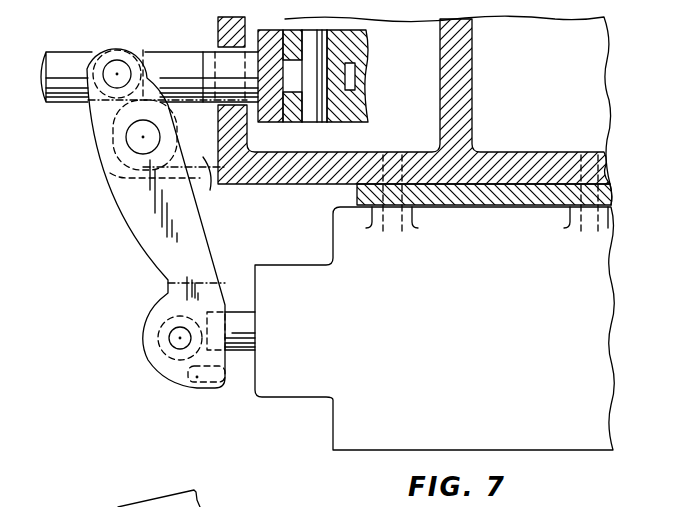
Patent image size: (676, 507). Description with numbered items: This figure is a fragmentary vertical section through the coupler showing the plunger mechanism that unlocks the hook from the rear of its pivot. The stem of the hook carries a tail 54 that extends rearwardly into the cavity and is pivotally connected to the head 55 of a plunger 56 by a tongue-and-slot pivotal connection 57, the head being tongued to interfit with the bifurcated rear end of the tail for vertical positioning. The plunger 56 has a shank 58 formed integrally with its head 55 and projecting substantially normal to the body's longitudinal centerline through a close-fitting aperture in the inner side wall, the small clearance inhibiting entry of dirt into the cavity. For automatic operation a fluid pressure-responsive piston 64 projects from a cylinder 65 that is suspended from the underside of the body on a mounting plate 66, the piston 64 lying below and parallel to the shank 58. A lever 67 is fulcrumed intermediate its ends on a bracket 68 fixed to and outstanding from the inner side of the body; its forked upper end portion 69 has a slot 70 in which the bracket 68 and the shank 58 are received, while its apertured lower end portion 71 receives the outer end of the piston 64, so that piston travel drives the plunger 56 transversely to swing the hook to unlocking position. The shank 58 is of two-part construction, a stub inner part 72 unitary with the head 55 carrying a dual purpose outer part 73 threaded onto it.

The tail 54 is at (367, 50).
The head 55 is at (340, 77).
The plunger 56 is at (77, 43).
The tongue-and-slot pivotal connection 57 is at (315, 115).
The shank 58 is at (180, 54).
The piston 64 is at (240, 323).
The cylinder 65 is at (333, 250).
The mounting plate 66 is at (483, 200).
The lever 67 is at (202, 230).
The bracket 68 is at (214, 184).
The forked upper end portion 69 is at (96, 128).
The slot 70 is at (112, 175).
The apertured lower end portion 71 is at (155, 310).
The stub inner part 72 is at (213, 56).
The outer part 73 is at (63, 98).